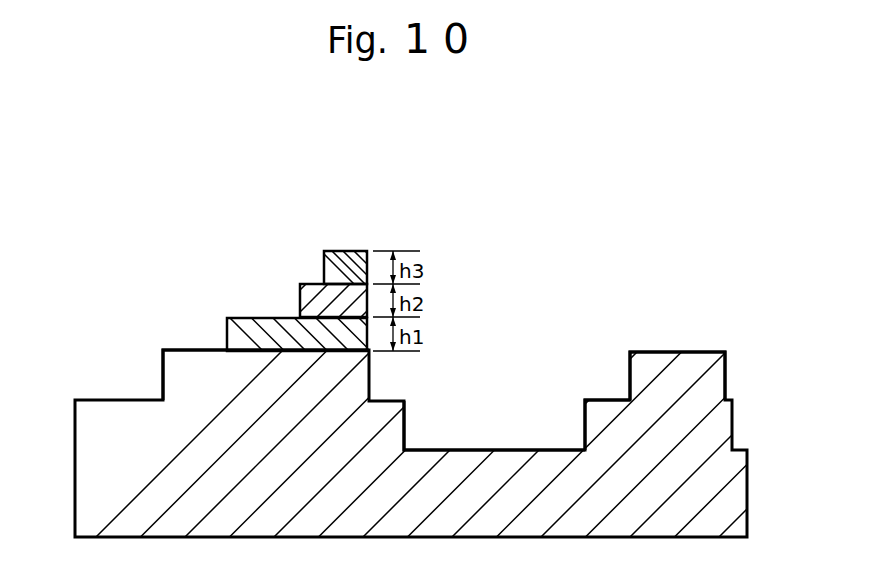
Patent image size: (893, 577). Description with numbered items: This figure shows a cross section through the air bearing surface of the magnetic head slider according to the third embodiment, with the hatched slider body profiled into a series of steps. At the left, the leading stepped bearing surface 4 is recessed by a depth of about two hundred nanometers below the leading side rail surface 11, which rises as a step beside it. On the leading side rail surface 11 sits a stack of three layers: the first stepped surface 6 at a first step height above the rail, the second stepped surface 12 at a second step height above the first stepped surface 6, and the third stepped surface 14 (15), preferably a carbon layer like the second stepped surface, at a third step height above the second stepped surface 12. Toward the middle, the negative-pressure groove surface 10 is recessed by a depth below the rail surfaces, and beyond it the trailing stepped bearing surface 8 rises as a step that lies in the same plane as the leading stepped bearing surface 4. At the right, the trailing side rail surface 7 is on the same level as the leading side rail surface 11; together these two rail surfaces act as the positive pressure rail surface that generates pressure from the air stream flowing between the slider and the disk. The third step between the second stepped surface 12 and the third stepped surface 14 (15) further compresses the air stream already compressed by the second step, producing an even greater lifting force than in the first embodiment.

The leading stepped bearing surface 4 is at (107, 400).
The leading side rail surface 11 is at (200, 349).
The first stepped surface 6 is at (253, 317).
The second stepped surface 12 is at (315, 293).
The third stepped surface 14 is at (368, 231).
The third stepped surface 15 is at (357, 252).
The negative-pressure groove surface 10 is at (511, 450).
The trailing stepped bearing surface 8 is at (605, 399).
The trailing side rail surface 7 is at (671, 351).